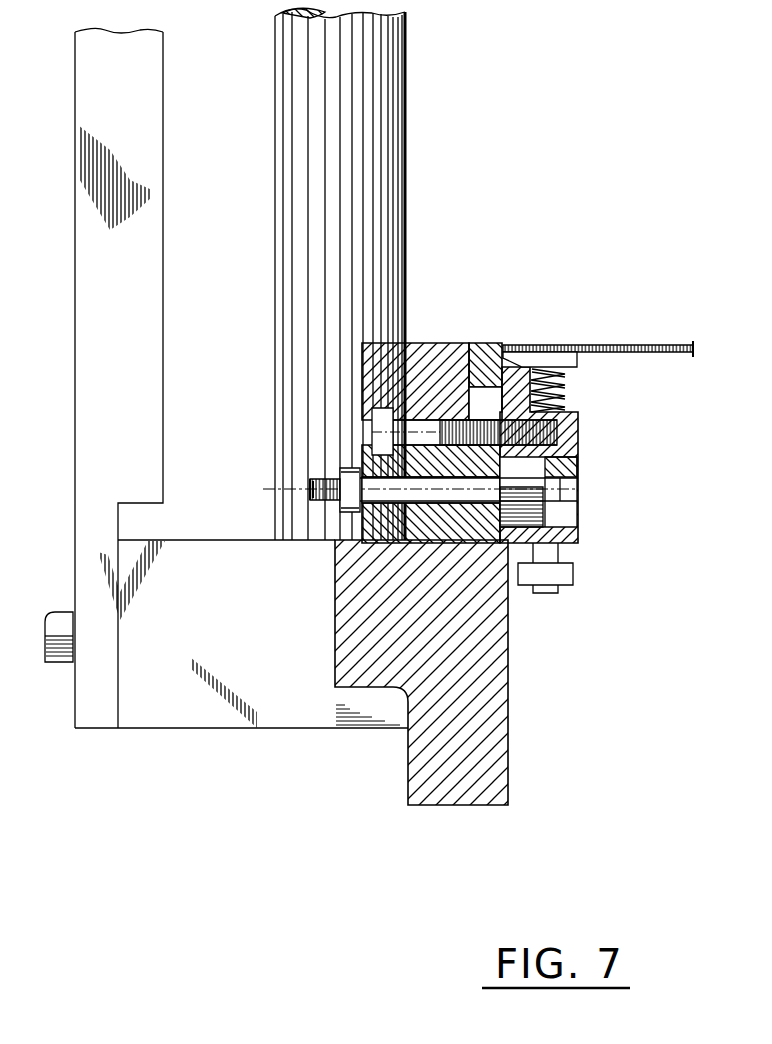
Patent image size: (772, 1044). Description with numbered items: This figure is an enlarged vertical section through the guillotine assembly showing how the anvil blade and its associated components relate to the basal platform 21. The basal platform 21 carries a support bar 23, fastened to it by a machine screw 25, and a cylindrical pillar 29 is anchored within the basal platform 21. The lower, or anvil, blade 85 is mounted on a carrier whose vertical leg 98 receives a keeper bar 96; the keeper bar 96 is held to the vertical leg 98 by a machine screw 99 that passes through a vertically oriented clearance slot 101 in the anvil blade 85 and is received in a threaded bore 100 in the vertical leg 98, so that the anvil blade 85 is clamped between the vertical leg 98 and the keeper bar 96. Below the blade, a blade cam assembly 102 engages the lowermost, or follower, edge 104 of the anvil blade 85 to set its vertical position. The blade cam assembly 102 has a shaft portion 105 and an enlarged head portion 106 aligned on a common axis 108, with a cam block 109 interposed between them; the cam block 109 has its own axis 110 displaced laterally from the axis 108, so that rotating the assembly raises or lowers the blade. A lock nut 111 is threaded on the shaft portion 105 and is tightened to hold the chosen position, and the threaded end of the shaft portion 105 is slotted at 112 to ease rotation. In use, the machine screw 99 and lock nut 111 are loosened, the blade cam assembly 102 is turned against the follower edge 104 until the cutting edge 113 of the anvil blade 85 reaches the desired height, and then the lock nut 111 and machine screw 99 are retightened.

The basal platform 21 is at (293, 713).
The support bar 23 is at (140, 357).
The machine screw 25 is at (56, 650).
The cylindrical pillar 29 is at (400, 70).
The anvil blade 85 is at (487, 347).
The keeper bar 96 is at (421, 355).
The vertical leg 98 is at (565, 420).
The machine screw 99 is at (382, 420).
The threaded bore 100 is at (558, 431).
The clearance slot 101 is at (478, 405).
The blade cam assembly 102 is at (564, 506).
The follower edge 104 is at (548, 472).
The shaft portion 105 is at (405, 488).
The enlarged head portion 106 is at (527, 510).
The axis 108 is at (265, 491).
The cam block 109 is at (480, 541).
The axis 110 is at (472, 498).
The lock nut 111 is at (347, 468).
The slot 112 is at (310, 490).
The cutting edge 113 is at (482, 365).